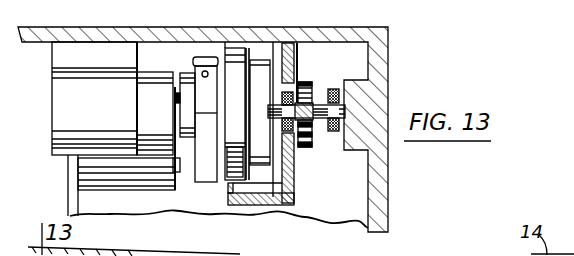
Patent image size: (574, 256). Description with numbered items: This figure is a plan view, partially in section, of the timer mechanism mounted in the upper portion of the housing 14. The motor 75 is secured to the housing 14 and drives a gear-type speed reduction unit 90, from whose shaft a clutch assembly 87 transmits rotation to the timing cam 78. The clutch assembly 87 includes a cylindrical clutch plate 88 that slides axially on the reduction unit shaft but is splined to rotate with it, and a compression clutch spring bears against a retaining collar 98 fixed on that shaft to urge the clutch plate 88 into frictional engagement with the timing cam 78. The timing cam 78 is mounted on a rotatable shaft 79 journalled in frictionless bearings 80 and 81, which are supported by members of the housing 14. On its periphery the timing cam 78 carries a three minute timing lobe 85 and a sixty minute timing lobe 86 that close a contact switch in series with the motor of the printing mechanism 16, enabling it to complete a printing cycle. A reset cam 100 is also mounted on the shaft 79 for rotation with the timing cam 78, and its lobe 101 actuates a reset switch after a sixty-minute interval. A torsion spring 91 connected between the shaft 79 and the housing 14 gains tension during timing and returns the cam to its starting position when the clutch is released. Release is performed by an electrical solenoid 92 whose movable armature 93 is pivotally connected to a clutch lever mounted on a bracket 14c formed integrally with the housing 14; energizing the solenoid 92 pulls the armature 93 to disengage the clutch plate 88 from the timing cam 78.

The housing 14 is at (380, 77).
The bracket 14c is at (207, 56).
The motor 75 is at (60, 85).
The timing cam 78 is at (268, 74).
The rotatable shaft 79 is at (172, 118).
The frictionless bearing 80 is at (293, 82).
The frictionless bearing 81 is at (330, 82).
The three minute timing lobe 85 is at (280, 225).
The sixty minute timing lobe 86 is at (229, 178).
The clutch assembly 87 is at (177, 137).
The clutch plate 88 is at (172, 100).
The gear-type speed reduction unit 90 is at (147, 90).
The torsion spring 91 is at (302, 148).
The electrical solenoid 92 is at (95, 171).
The armature 93 is at (184, 182).
The retaining collar 98 is at (173, 163).
The reset cam 100 is at (318, 28).
The lobe 101 is at (288, 192).
The printing mechanism 16 is at (282, 246).